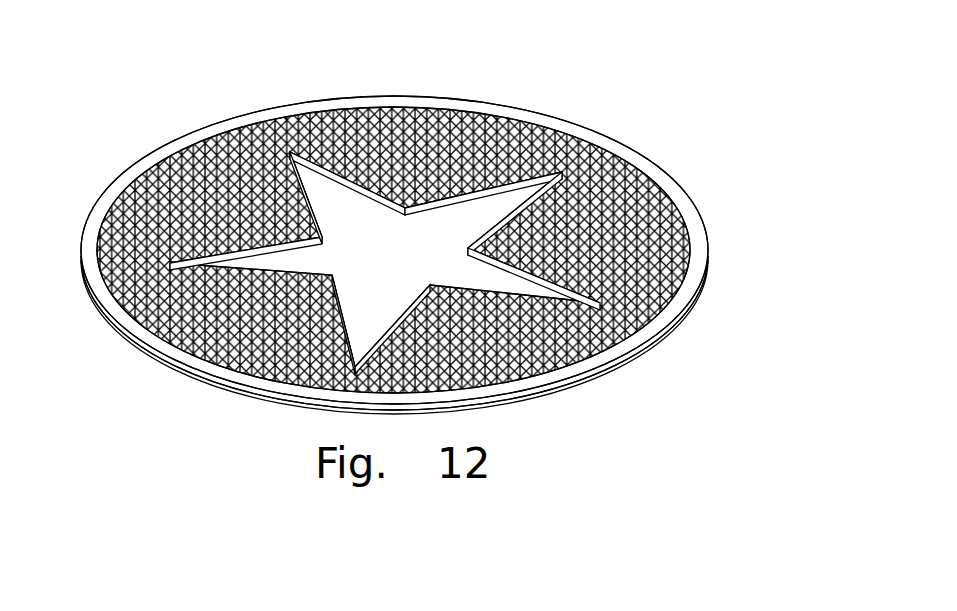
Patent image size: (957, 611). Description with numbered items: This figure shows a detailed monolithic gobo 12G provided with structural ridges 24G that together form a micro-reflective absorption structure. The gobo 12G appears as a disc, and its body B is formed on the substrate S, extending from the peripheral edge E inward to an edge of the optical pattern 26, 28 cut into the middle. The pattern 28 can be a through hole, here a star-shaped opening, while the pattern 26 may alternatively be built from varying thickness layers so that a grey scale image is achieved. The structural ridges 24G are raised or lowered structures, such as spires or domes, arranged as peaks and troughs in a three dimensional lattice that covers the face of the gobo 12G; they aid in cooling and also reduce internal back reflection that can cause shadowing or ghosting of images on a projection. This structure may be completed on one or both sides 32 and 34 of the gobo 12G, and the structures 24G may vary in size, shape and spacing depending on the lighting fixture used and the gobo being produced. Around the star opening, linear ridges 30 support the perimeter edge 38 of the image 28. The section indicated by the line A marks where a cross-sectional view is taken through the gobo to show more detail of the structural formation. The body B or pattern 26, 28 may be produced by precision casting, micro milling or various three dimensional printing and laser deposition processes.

The monolithic gobo 12G is at (668, 150).
The structural ridges 24G is at (502, 88).
The side of gobo 32 is at (288, 93).
The side of gobo 34 is at (200, 396).
The linear ridges 30 is at (459, 217).
The perimeter edge 38 is at (386, 213).
The pattern 26 is at (417, 283).
The image 28 is at (385, 259).
The substrate S is at (100, 288).
The peripheral edge E is at (120, 335).
The body B is at (146, 365).
The section line A- A is at (50, 186).